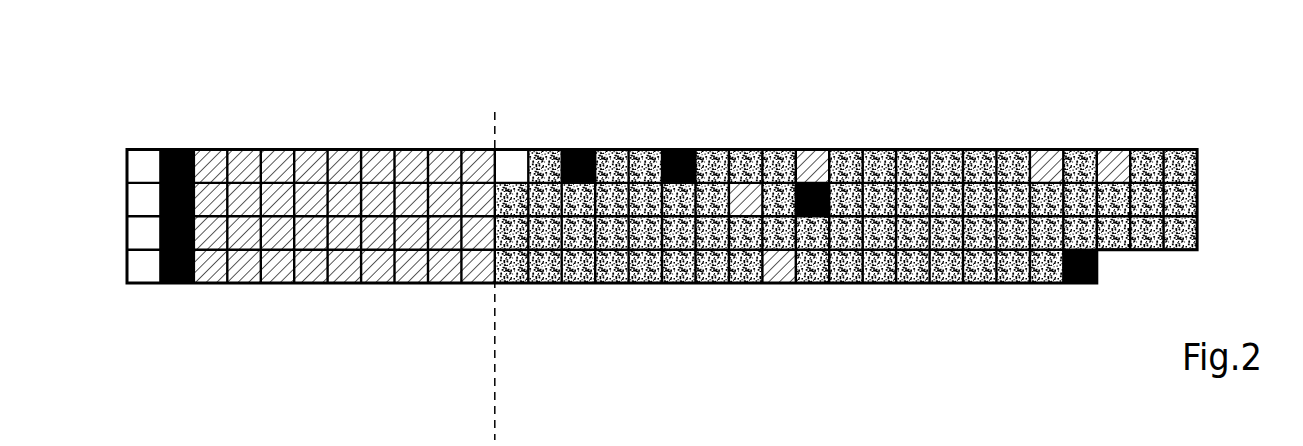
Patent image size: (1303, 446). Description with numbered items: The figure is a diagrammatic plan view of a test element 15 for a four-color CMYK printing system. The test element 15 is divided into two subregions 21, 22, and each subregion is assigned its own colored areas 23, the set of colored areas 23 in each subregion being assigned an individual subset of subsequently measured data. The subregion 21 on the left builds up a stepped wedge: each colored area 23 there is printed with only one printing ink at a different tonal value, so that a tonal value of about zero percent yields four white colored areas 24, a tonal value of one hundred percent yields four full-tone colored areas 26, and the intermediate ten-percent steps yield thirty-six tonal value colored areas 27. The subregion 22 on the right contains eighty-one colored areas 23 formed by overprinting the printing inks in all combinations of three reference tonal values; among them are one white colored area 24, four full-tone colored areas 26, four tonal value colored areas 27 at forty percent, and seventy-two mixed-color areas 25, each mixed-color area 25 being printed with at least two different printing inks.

The test element 15 is at (1196, 99).
The subregion 21 is at (334, 97).
The subregion 22 is at (728, 96).
The colored area 23 is at (345, 260).
The white colored area 24 is at (138, 268).
The mixed-color area 25 is at (982, 160).
The full-tone colored area 26 is at (222, 262).
The tonal value colored area 27 is at (443, 150).